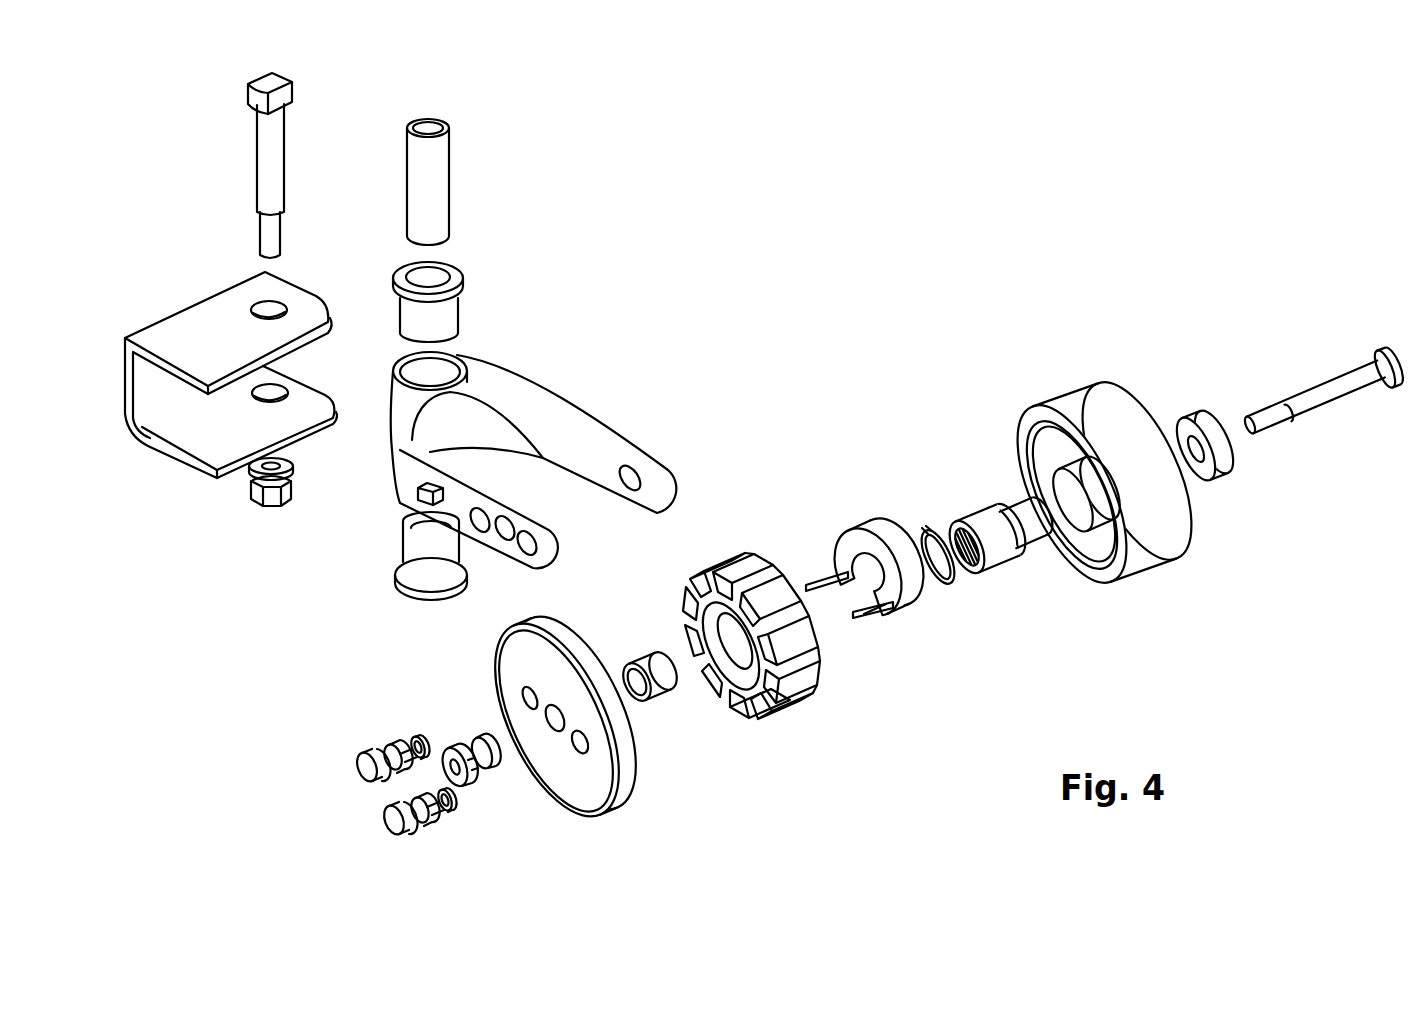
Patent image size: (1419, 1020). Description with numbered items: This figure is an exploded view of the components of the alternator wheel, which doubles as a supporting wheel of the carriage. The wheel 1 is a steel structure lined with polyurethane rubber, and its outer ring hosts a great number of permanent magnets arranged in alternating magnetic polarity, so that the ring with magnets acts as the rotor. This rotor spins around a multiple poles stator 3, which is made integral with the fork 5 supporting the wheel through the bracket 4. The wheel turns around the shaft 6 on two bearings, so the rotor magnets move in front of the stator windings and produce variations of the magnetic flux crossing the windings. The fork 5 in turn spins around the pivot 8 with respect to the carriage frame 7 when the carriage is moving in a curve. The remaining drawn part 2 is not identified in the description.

The wheel lined with polyurethane rubber 1 is at (1083, 397).
The ratchet gear 2 is at (800, 693).
The multiple poles stator 3 is at (723, 688).
The bracket 4 is at (910, 588).
The fork 5 is at (562, 423).
The shaft 6 is at (1300, 400).
The carriage frame 7 is at (207, 460).
The pivot 8 is at (277, 150).